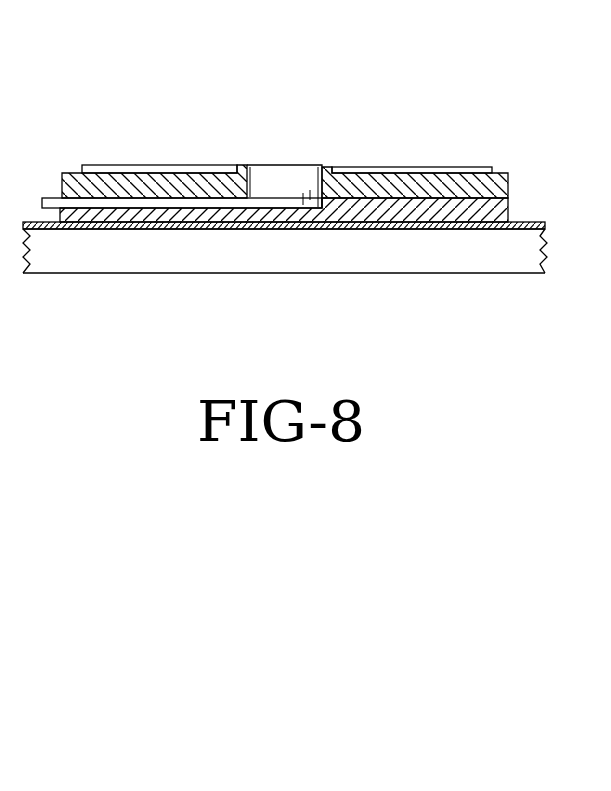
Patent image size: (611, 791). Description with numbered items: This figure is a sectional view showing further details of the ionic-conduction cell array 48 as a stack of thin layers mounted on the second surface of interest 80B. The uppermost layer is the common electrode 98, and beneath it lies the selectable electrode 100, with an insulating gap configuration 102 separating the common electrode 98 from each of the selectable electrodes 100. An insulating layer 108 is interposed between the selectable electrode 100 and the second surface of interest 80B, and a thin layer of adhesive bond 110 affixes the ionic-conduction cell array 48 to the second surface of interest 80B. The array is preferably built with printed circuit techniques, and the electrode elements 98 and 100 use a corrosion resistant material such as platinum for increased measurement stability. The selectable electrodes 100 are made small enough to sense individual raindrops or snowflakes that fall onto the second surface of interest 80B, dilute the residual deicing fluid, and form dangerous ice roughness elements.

The ionic-conduction cell array 48 is at (481, 129).
The common electrode 98 is at (115, 166).
The selectable electrode 100 is at (295, 170).
The insulating gap configuration 102 is at (242, 166).
The insulating layer 108 is at (500, 210).
The adhesive bond 110 is at (170, 229).
The second surface of interest 80B is at (432, 257).